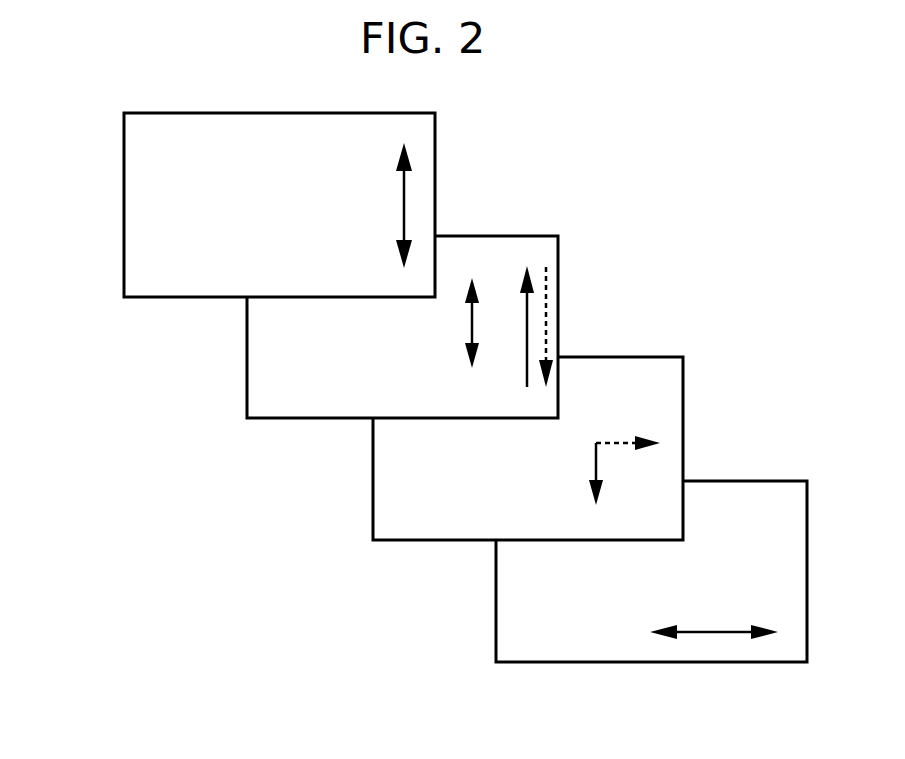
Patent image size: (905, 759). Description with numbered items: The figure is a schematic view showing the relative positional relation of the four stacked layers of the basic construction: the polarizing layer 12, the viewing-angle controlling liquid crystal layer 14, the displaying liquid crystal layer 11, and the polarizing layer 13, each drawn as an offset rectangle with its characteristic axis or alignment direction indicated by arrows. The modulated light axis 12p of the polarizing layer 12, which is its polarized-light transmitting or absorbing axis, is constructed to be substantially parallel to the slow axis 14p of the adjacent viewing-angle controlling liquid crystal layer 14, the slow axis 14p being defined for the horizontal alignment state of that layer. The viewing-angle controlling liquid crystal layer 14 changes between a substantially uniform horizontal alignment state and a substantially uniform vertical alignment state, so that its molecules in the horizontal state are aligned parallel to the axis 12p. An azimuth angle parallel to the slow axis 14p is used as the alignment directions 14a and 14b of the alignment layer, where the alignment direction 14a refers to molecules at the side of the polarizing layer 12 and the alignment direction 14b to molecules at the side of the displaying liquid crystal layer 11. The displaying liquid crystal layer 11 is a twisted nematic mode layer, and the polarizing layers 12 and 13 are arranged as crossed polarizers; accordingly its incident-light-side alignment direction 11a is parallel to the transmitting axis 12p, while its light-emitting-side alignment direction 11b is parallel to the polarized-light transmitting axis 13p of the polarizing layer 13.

The displaying liquid crystal layer 11 is at (373, 506).
The incident-light-side alignment direction 11a is at (596, 450).
The light-emitting-side alignment direction 11b is at (614, 443).
The polarizing layer 12 is at (124, 262).
The modulated light axis 12p is at (404, 214).
The polarizing layer 13 is at (496, 628).
The polarized-light transmitting axis 13p is at (717, 632).
The viewing-angle controlling liquid crystal layer 14 is at (247, 383).
The alignment direction 14a is at (527, 357).
The alignment direction 14b is at (546, 330).
The slow axis 14p is at (472, 322).